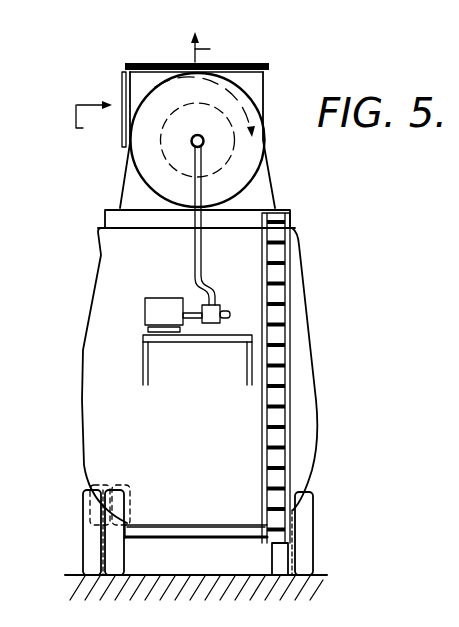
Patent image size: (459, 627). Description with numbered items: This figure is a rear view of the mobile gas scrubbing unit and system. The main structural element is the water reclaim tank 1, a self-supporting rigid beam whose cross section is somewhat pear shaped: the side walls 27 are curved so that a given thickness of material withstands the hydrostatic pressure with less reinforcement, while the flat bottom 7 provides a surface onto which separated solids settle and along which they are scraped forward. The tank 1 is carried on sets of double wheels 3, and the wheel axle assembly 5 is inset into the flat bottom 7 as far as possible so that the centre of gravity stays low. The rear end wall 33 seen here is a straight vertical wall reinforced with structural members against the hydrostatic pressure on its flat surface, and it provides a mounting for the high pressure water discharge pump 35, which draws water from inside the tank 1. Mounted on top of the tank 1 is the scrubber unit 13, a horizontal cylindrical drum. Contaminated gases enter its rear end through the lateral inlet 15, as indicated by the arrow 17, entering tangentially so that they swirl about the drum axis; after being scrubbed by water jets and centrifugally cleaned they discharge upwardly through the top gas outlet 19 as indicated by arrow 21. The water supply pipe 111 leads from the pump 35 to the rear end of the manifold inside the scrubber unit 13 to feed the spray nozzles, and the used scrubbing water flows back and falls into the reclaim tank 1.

The water reclaim tank 1 is at (203, 366).
The double wheels 3 is at (112, 541).
The wheel axle assembly 5 is at (193, 538).
The flat bottom 7 is at (177, 524).
The scrubber unit 13 is at (245, 155).
The lateral inlet 15 is at (121, 80).
The arrow 17 is at (94, 123).
The top gas outlet 19 is at (268, 63).
The arrow 21 is at (218, 48).
The side walls 27 is at (90, 305).
The rear end wall 33 is at (297, 370).
The high pressure water discharge pump 35 is at (216, 310).
The water supply pipe 111 is at (203, 249).